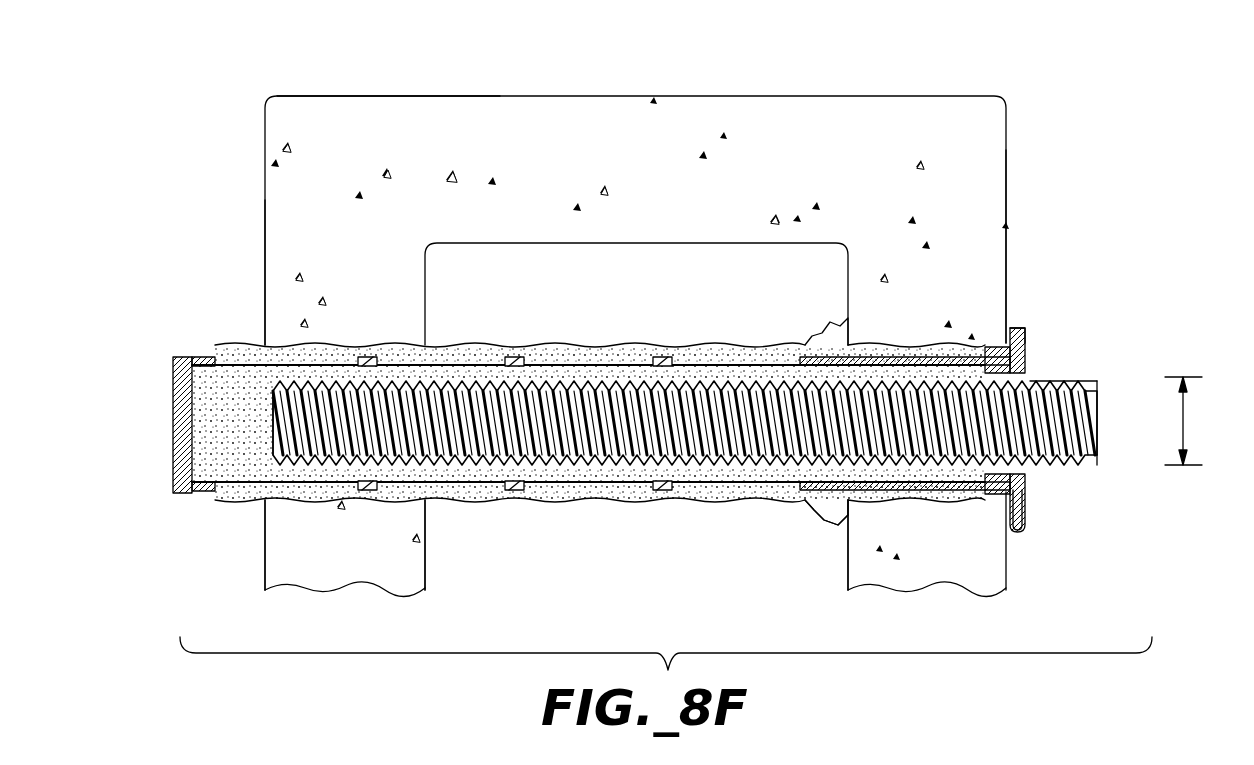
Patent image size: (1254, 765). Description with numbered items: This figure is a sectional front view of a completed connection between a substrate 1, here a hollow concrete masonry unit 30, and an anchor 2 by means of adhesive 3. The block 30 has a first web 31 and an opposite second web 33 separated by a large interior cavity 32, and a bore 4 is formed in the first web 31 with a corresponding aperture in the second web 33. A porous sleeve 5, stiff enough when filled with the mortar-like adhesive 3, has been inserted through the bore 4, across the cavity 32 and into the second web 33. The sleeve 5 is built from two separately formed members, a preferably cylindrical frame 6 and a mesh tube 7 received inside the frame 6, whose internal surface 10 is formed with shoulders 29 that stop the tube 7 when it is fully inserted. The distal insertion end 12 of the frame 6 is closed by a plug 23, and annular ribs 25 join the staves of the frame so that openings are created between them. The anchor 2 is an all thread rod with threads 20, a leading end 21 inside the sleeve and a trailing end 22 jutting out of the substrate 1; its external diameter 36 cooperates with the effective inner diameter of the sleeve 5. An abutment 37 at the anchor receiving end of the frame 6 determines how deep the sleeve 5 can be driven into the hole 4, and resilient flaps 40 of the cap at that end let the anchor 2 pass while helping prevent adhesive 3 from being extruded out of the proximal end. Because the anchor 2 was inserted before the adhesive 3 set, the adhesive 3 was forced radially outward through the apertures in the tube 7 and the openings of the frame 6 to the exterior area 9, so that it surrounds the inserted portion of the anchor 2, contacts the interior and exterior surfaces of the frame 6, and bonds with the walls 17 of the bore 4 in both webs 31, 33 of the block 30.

The substrate 1 is at (411, 97).
The anchor 2 is at (1052, 467).
The adhesive 3 is at (255, 500).
The bore 4 is at (1025, 350).
The sleeve 5 is at (672, 518).
The frame 6 is at (838, 512).
The tube 7 is at (438, 487).
The exterior area 9 is at (646, 318).
The internal surface 10 is at (652, 474).
The insertion end 12 is at (187, 490).
The walls of the bore 17 is at (1010, 330).
The threads 20 is at (1092, 430).
The leading end 21 is at (273, 418).
The trailing end 22 is at (1097, 400).
The plug 23 is at (174, 422).
The ribs 25 is at (208, 496).
The shoulders 29 is at (800, 360).
The concrete masonry unit 30 is at (297, 96).
The first web 31 is at (1008, 206).
The interior cavity 32 is at (507, 565).
The second web 33 is at (265, 258).
The external diameter 36 is at (1193, 421).
The abutment 37 is at (1012, 340).
The resilient flaps 40 is at (960, 495).